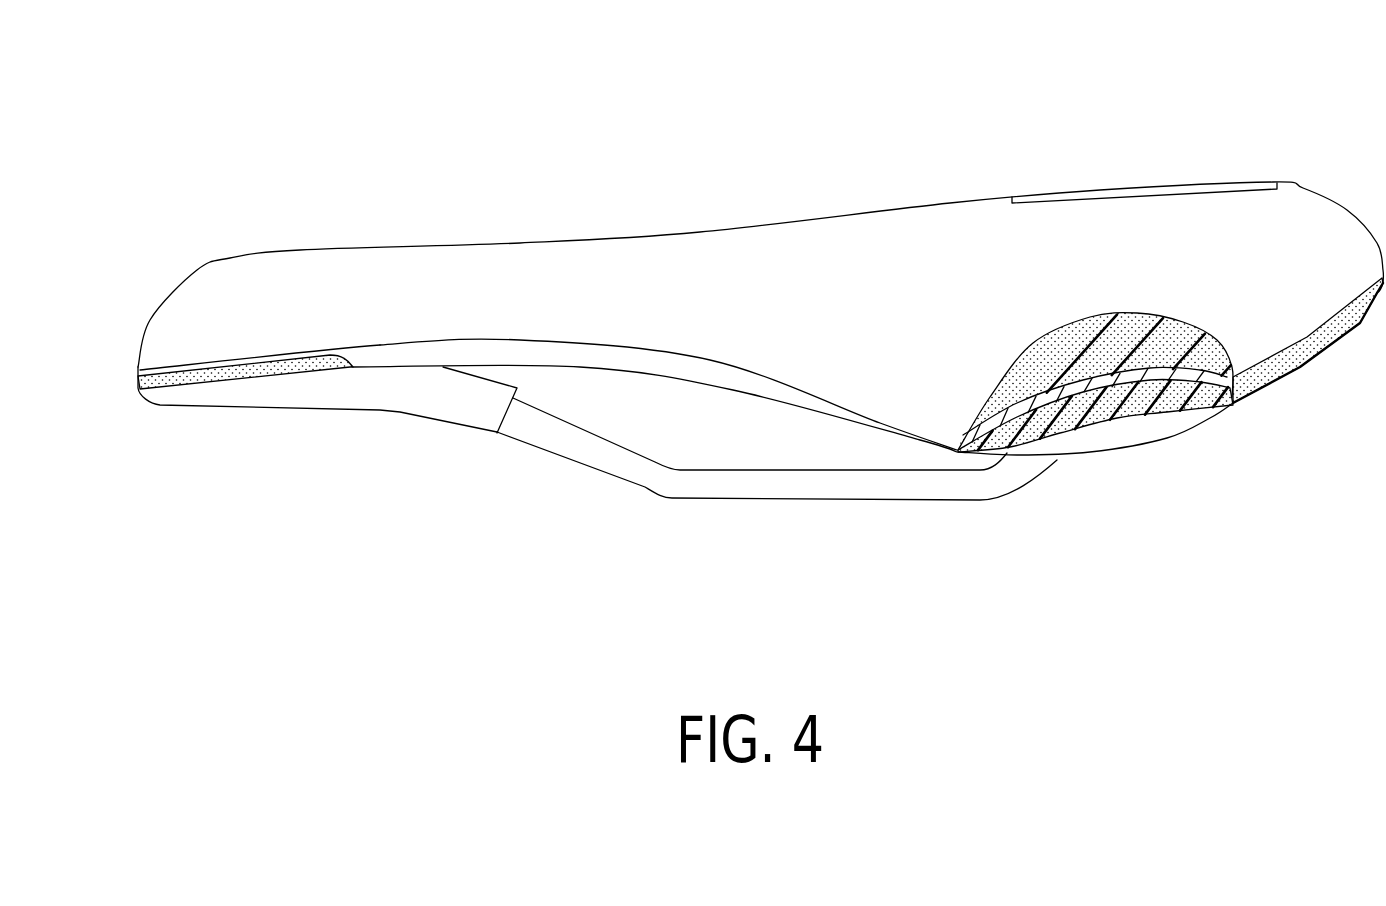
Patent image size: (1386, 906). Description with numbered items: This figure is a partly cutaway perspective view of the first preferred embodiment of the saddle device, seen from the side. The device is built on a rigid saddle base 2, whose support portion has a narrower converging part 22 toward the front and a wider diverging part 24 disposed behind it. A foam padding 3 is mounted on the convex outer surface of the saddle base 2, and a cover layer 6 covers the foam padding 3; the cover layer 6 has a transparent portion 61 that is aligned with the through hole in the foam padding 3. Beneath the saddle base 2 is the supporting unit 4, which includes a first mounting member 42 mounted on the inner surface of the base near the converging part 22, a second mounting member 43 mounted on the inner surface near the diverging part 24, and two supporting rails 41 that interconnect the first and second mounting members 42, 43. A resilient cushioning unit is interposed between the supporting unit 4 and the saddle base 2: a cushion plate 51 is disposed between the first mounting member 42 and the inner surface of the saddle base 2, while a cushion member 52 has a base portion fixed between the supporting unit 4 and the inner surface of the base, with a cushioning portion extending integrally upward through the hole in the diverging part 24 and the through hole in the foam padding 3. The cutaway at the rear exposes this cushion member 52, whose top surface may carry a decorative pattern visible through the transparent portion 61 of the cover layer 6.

The saddle base 2 is at (580, 366).
The converging part 22 is at (188, 367).
The diverging part 24 is at (1213, 413).
The foam padding 3 is at (1177, 340).
The supporting unit 4 is at (603, 470).
The supporting rails 41 is at (697, 483).
The first mounting member 42 is at (338, 387).
The second mounting member 43 is at (1140, 433).
The cushion plate 51 is at (217, 382).
The cushion member 52 is at (1063, 420).
The cover layer 6 is at (1055, 327).
The transparent portion 61 is at (1100, 190).